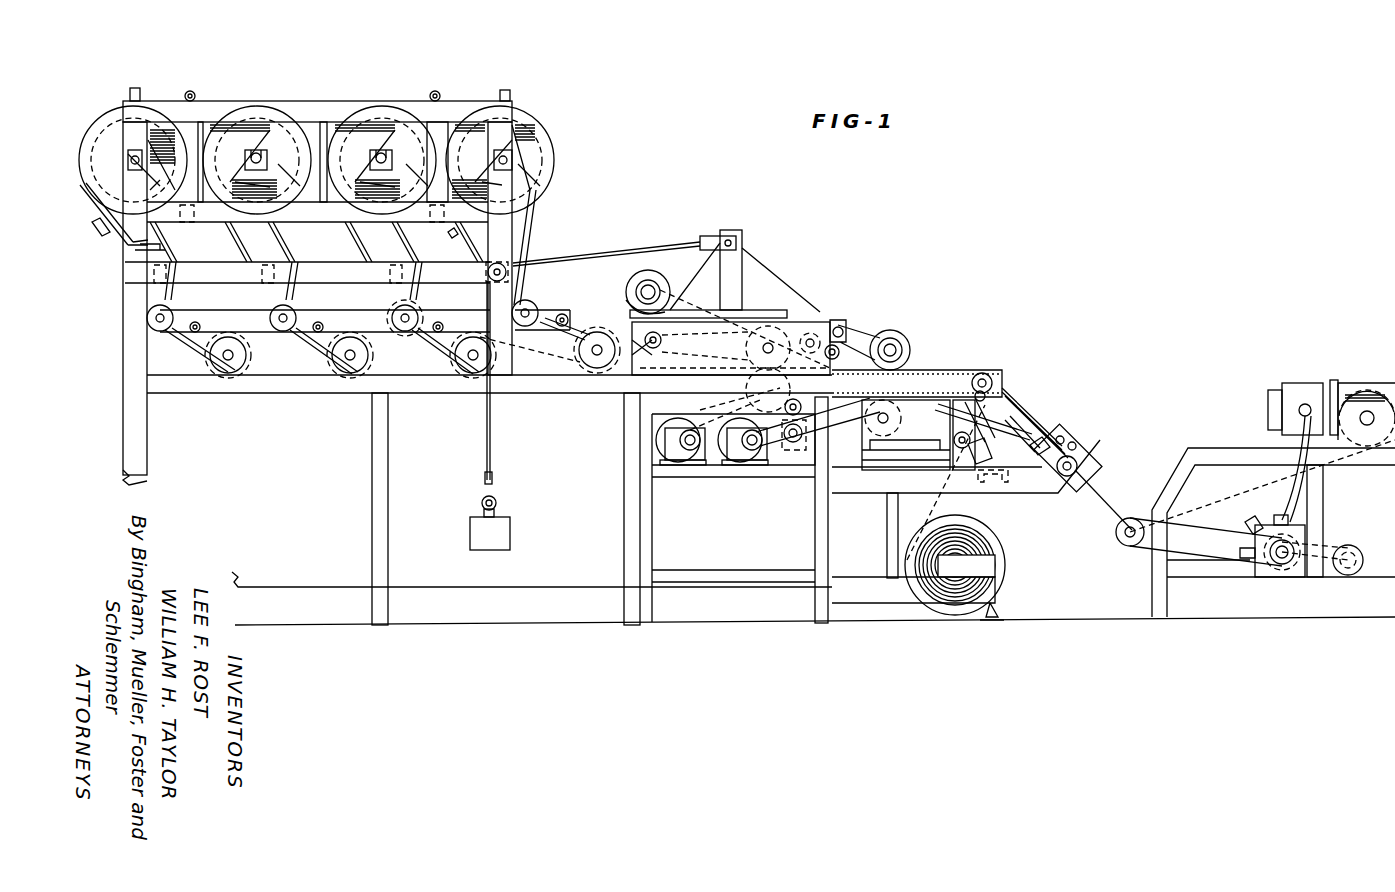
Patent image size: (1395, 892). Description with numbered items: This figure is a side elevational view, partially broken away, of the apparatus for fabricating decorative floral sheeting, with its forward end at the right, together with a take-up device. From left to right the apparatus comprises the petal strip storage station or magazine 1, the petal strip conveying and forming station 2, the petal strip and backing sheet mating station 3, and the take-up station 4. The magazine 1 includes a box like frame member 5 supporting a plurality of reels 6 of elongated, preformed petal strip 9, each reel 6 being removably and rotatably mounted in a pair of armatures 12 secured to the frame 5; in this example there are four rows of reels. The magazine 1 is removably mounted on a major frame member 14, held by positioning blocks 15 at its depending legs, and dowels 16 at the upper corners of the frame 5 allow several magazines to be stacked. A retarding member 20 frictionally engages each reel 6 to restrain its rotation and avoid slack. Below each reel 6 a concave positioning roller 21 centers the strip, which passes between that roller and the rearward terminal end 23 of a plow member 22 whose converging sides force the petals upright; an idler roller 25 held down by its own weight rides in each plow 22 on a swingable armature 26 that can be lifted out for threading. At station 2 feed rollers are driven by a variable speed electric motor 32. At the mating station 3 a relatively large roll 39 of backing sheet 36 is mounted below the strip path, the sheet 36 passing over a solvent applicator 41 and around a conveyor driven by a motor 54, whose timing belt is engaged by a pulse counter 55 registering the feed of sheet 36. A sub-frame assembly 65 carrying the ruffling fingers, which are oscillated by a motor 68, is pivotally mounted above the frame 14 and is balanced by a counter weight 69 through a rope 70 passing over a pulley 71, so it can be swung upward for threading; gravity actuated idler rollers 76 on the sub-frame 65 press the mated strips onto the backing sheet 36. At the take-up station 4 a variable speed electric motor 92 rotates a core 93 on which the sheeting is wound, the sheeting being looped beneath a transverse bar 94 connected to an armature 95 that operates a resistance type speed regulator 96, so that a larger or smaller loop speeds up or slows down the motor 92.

The petal strip storage station or magazine 1 is at (306, 82).
The petal strip conveying and forming station 2 is at (590, 246).
The petal strip and backing sheet mating station 3 is at (930, 366).
The take-up station 4 is at (1248, 440).
The box like frame member 5 is at (226, 106).
The reel 6 is at (120, 124).
The petal strip 9 is at (162, 232).
The armature 12 is at (326, 166).
The major frame member 14 is at (122, 358).
The positioning block 15 is at (172, 242).
The dowel 16 is at (137, 96).
The retarding member 20 is at (104, 244).
The positioning roller 21 is at (278, 312).
The plow member 22 is at (205, 360).
The rearward terminal end of plow member 23 is at (150, 316).
The idler roller 25 is at (243, 356).
The swingable armature 26 is at (328, 314).
The variable speed electric motor 32 is at (658, 439).
The backing sheet 36 is at (948, 514).
The roll of backing sheet 39 is at (988, 542).
The solvent applicator 41 is at (856, 424).
The motor 54 is at (726, 448).
The pulse counter 55 is at (790, 452).
The sub-frame assembly 65 is at (818, 312).
The motor 68 is at (626, 284).
The counter weight 69 is at (470, 536).
The rope 70 is at (646, 262).
The pulley 71 is at (518, 284).
The gravity actuated idler roller 76 is at (896, 344).
The variable speed electric motor 92 is at (1312, 380).
The core 93 is at (1378, 370).
The transverse bar 94 is at (1132, 519).
The armature 95 is at (1209, 554).
The resistance type speed regulator 96 is at (1290, 570).